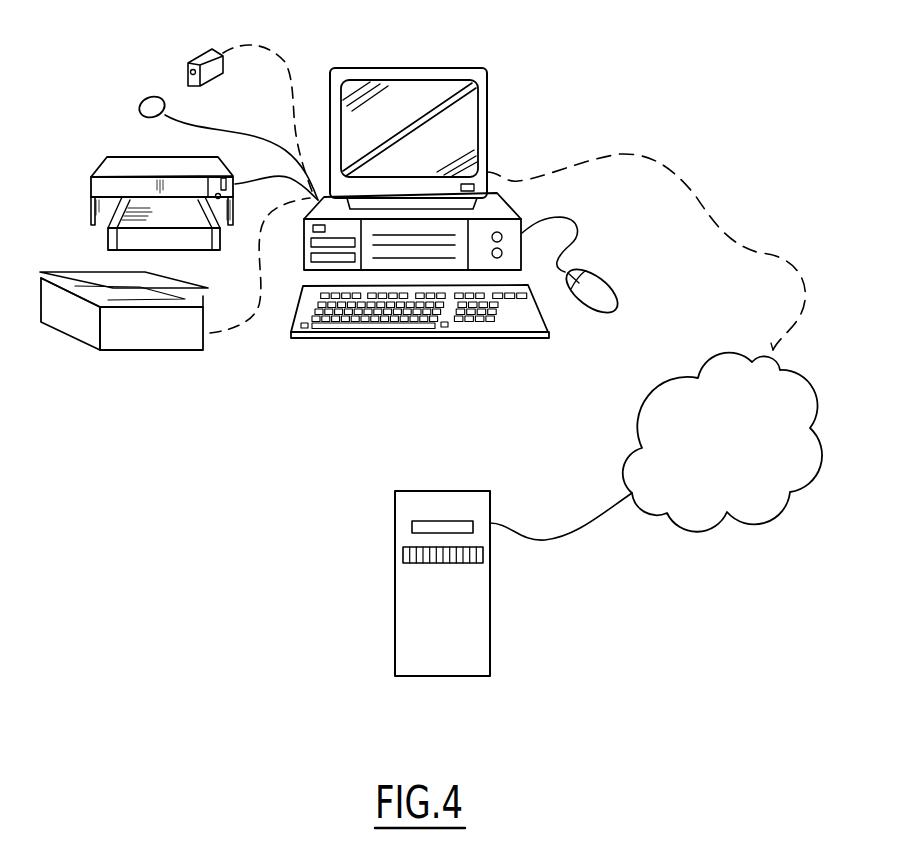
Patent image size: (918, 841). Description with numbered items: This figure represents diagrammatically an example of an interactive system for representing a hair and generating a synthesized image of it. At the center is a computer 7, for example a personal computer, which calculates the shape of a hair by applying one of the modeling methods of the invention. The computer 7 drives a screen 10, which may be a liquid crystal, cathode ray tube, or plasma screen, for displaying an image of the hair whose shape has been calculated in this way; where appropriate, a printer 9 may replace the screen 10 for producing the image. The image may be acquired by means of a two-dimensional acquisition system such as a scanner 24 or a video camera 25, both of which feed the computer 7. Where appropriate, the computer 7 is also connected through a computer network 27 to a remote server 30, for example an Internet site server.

The computer 7 is at (524, 210).
The printer 9 is at (120, 164).
The screen 10 is at (387, 68).
The scanner 24 is at (140, 336).
The video camera 25 is at (207, 52).
The computer network 27 is at (648, 423).
The remote server 30 is at (412, 607).